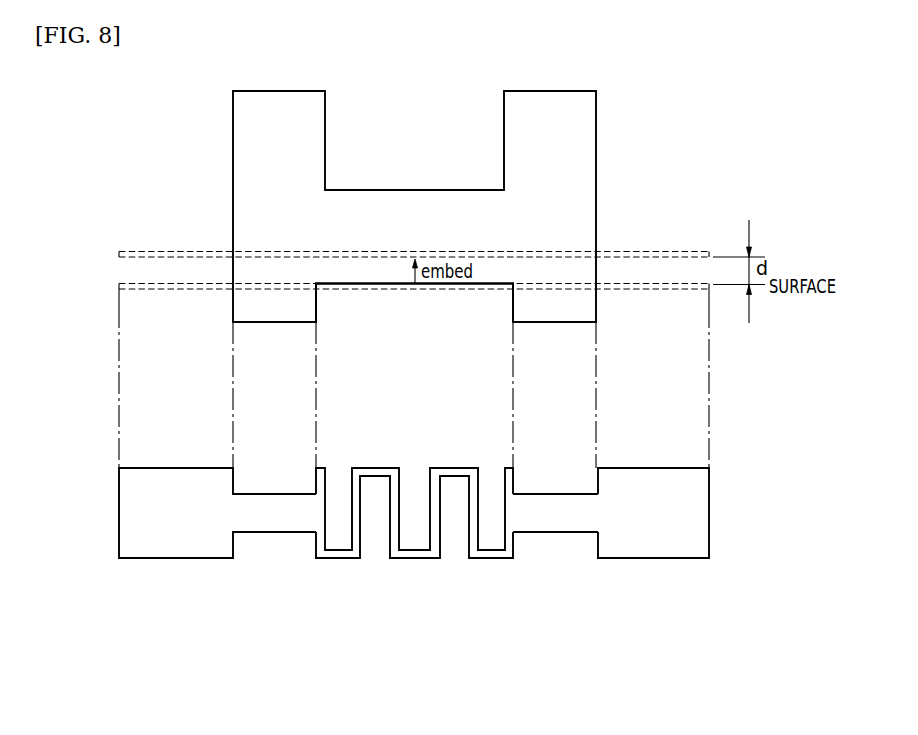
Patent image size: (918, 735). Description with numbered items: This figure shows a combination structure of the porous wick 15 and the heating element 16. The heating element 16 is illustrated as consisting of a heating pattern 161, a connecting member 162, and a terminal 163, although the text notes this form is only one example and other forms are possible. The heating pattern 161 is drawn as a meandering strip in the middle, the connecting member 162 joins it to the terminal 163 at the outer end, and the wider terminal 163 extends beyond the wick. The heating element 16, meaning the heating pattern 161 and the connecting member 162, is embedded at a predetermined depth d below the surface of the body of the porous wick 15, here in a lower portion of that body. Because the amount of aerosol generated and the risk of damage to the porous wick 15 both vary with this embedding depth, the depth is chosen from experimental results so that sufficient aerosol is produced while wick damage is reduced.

The porous wick 15 is at (594, 157).
The heating element 16 is at (414, 482).
The heating pattern 161 is at (492, 555).
The connecting member 162 is at (558, 527).
The terminal 163 is at (653, 550).